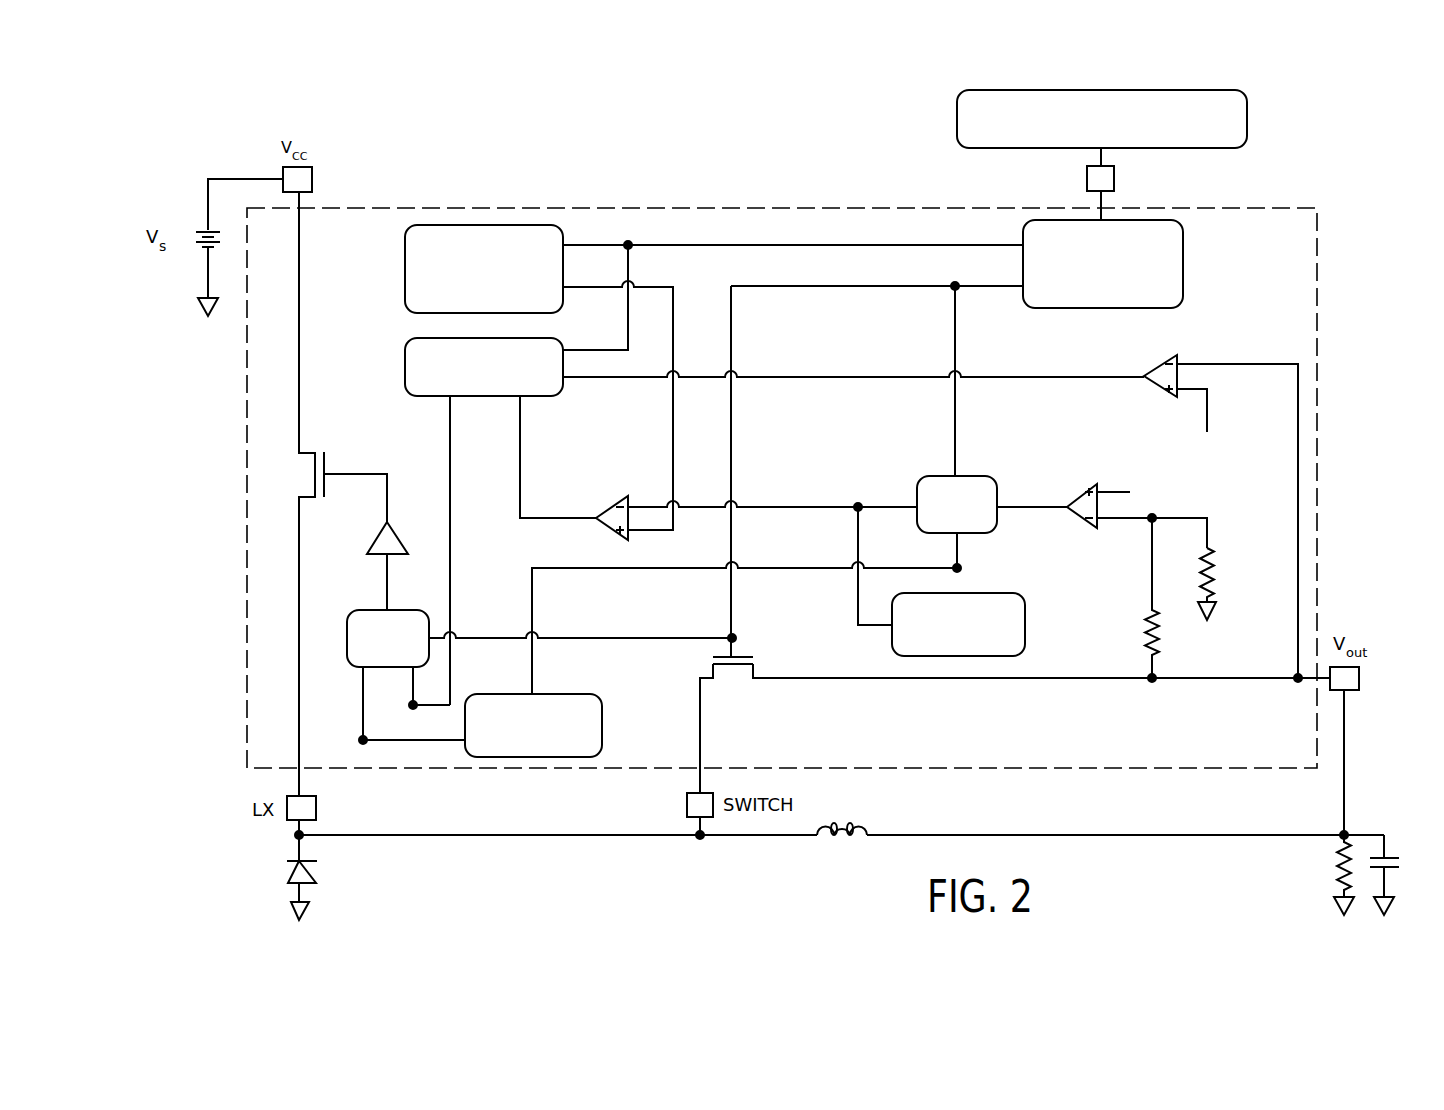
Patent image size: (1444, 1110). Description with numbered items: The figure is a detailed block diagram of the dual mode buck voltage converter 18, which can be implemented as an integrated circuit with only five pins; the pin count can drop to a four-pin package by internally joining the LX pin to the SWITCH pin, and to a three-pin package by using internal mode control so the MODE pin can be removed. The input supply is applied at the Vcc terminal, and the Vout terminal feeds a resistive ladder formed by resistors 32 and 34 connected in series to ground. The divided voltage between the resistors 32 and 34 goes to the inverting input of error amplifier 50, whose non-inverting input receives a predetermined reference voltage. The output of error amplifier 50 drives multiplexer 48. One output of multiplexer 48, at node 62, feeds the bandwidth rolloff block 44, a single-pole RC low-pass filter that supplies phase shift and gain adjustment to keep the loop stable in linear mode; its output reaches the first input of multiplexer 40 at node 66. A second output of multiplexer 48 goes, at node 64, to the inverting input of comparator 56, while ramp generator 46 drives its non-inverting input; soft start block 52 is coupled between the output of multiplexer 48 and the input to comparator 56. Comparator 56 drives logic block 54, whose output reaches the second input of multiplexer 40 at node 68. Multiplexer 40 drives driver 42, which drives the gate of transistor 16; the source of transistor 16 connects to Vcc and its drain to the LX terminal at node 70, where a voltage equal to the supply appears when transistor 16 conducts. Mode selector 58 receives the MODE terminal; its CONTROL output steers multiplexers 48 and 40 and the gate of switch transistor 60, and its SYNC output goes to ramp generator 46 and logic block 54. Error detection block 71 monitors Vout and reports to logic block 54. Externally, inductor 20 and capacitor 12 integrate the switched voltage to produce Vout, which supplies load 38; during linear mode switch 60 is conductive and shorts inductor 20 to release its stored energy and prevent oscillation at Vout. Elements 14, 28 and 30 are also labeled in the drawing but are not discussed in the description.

The capacitor 12 is at (1390, 865).
The diode 14 is at (315, 866).
The transistor 16 is at (313, 480).
The buck voltage converter 18 is at (228, 463).
The inductor 20 is at (845, 840).
The microcontroller 28 is at (1247, 119).
The output line 30 is at (640, 853).
The resistor 32 is at (1211, 583).
The resistor 34 is at (1158, 648).
The load 38 is at (1338, 868).
The multiplexer 40 is at (347, 640).
The driver 42 is at (373, 541).
The bandwidth rolloff block 44 is at (515, 695).
The ramp generator 46 is at (405, 268).
The multiplexer 48 is at (935, 475).
The error amplifier 50 is at (1077, 492).
The soft start block 52 is at (1025, 618).
The logic block 54 is at (405, 360).
The comparator 56 is at (605, 500).
The mode selector 58 is at (1183, 271).
The switch transistor 60 is at (740, 668).
The node 62 is at (967, 566).
The node 64 is at (855, 500).
The node 66 is at (358, 737).
The node 68 is at (418, 710).
The node 70 is at (296, 846).
The error detection block 71 is at (1157, 370).